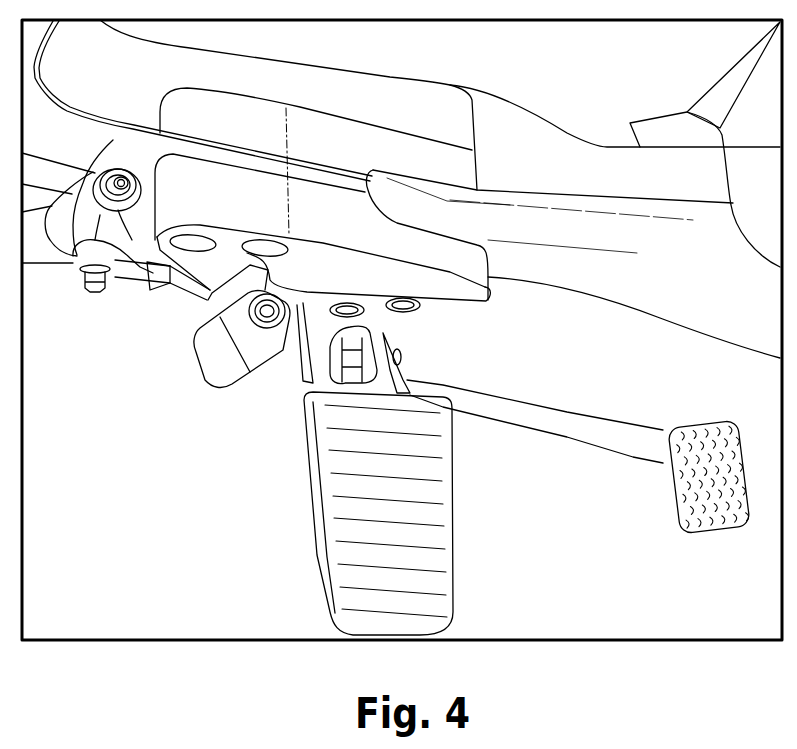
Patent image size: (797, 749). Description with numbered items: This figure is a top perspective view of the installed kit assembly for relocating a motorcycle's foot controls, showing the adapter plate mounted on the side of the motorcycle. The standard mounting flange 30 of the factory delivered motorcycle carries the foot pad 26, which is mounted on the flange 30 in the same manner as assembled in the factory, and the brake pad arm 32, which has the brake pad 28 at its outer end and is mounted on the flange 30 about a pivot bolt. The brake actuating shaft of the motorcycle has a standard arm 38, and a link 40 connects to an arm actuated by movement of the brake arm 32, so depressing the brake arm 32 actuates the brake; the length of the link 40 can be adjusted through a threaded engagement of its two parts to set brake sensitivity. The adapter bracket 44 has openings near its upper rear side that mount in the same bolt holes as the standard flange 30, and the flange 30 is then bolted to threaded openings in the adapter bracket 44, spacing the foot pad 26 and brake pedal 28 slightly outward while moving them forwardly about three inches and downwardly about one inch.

The foot pad 26 is at (432, 493).
The brake pad 28 is at (693, 482).
The mounting flange 30 is at (465, 293).
The brake pad arm 32 is at (570, 422).
The arm 38 is at (70, 273).
The link 40 is at (130, 278).
The adapter bracket 44 is at (243, 183).